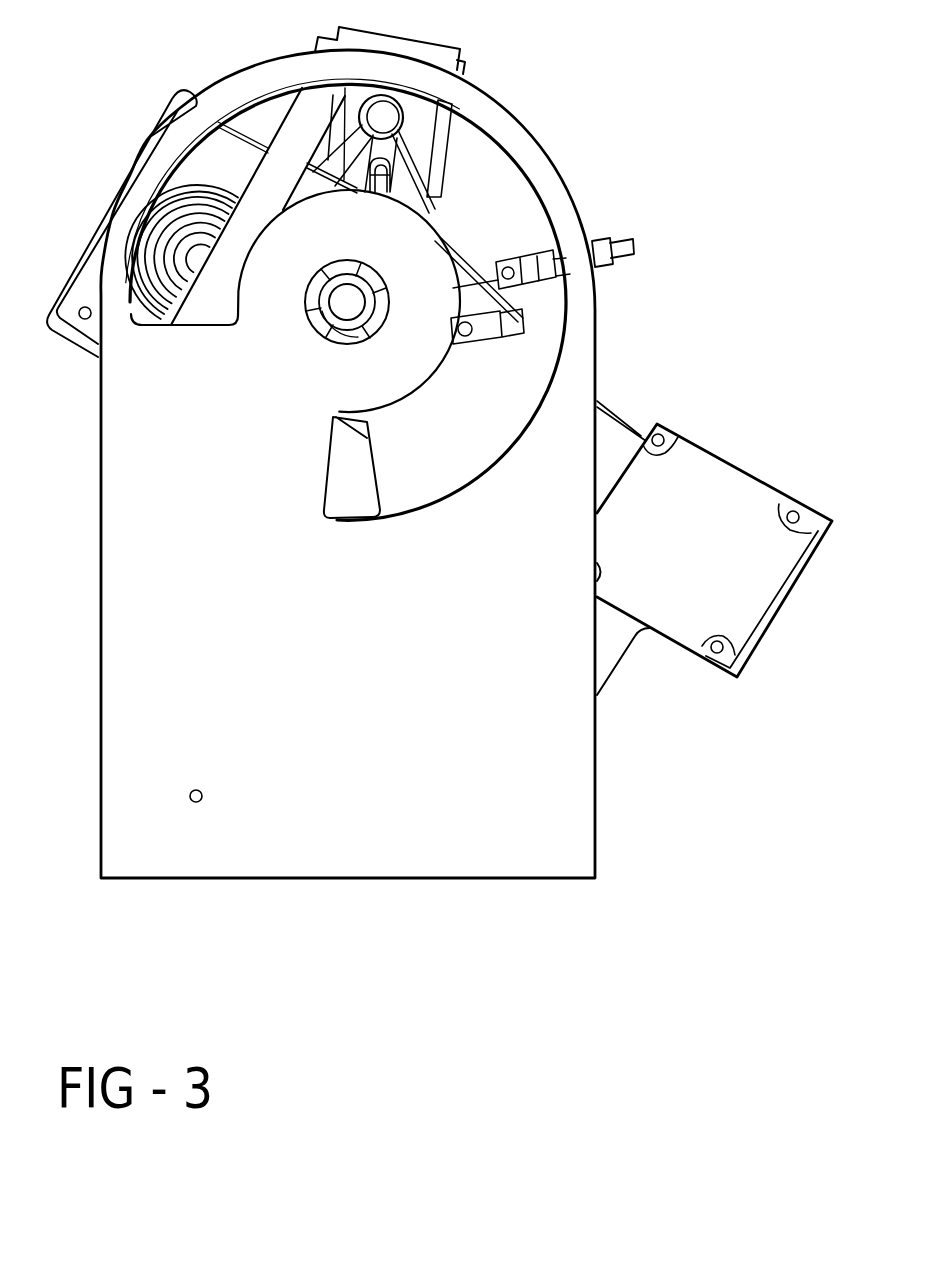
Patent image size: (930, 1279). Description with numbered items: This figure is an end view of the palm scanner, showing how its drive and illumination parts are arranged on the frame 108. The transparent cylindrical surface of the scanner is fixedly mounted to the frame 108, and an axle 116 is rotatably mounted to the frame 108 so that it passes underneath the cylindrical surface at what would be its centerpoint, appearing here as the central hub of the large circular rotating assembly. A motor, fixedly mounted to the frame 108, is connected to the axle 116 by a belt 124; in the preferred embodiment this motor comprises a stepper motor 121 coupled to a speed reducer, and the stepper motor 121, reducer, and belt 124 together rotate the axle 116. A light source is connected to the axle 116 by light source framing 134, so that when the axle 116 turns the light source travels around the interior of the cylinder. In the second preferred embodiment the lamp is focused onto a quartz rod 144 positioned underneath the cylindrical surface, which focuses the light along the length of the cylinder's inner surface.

The frame 108 is at (576, 218).
The axle 116 is at (347, 307).
The stepper motor 121 is at (720, 492).
The belt 124 is at (597, 407).
The light source framing 134 is at (427, 145).
The quartz rod 144 is at (383, 117).